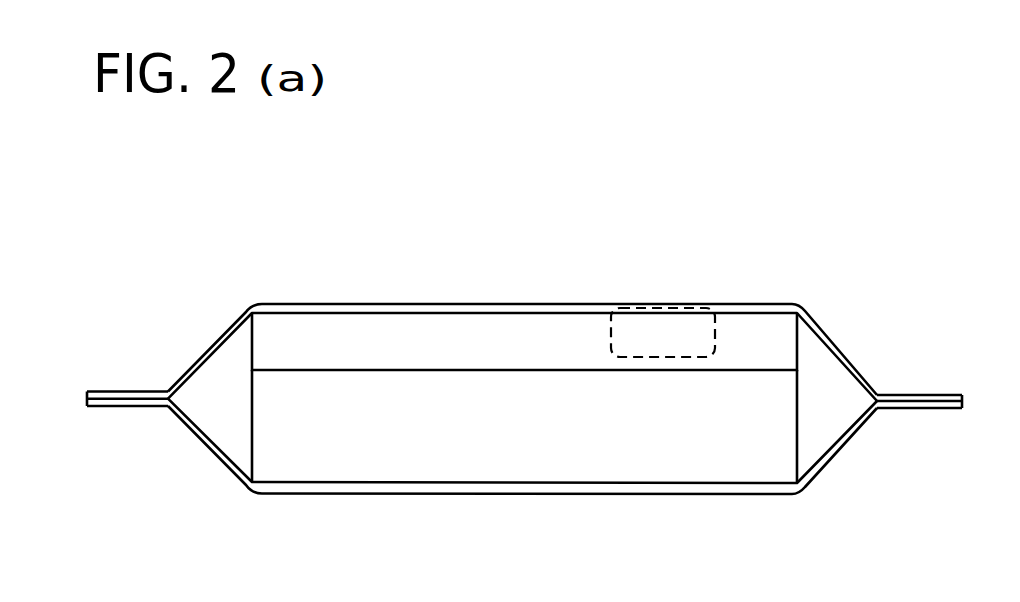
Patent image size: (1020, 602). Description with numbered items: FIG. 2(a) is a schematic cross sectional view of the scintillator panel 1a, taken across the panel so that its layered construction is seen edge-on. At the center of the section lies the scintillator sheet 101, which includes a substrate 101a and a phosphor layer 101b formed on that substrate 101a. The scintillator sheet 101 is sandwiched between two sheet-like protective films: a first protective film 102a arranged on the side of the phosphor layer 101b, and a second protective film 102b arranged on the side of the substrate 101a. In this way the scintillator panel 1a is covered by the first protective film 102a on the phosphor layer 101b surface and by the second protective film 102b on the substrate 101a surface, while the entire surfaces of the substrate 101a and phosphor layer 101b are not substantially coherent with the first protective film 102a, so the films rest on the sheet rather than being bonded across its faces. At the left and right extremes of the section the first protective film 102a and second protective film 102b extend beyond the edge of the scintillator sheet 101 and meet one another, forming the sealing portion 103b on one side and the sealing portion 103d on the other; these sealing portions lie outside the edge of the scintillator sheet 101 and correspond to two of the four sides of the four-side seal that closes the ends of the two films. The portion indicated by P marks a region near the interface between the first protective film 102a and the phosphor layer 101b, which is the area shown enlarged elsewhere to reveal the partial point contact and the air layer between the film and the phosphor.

The scintillator panel 1a is at (758, 234).
The scintillator sheet 101 is at (251, 438).
The substrate 101a is at (317, 460).
The phosphor layer 101b is at (286, 333).
The first protective film 102a is at (468, 303).
The second protective film 102b is at (473, 497).
The sealing portion 103b is at (907, 396).
The sealing portion 103d is at (120, 390).
The portion indicated by P is at (645, 308).